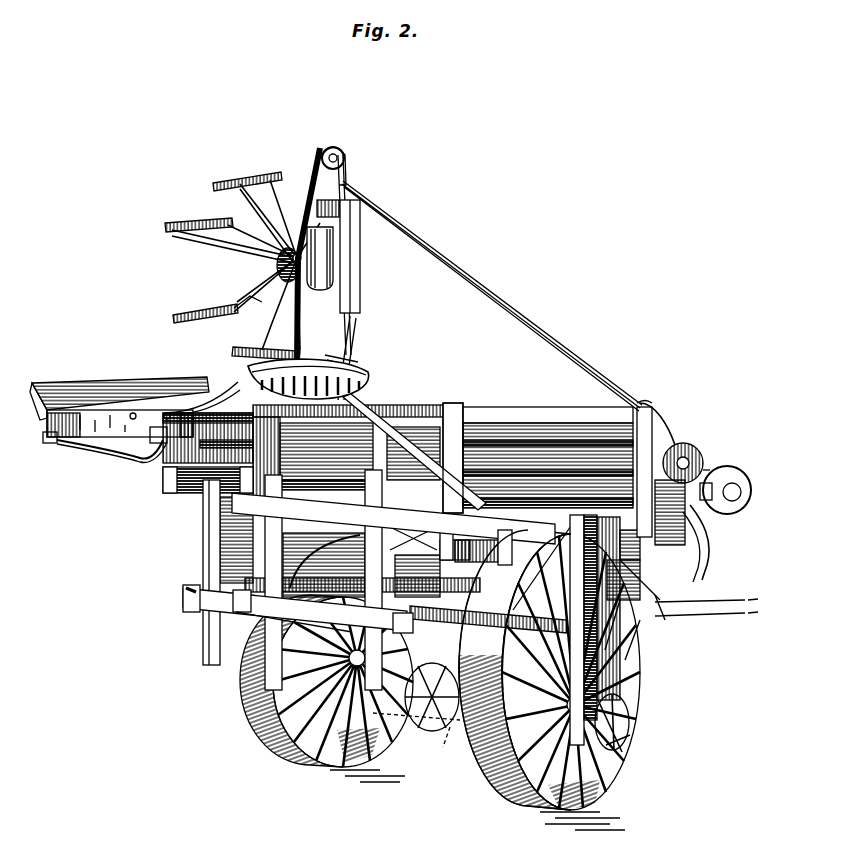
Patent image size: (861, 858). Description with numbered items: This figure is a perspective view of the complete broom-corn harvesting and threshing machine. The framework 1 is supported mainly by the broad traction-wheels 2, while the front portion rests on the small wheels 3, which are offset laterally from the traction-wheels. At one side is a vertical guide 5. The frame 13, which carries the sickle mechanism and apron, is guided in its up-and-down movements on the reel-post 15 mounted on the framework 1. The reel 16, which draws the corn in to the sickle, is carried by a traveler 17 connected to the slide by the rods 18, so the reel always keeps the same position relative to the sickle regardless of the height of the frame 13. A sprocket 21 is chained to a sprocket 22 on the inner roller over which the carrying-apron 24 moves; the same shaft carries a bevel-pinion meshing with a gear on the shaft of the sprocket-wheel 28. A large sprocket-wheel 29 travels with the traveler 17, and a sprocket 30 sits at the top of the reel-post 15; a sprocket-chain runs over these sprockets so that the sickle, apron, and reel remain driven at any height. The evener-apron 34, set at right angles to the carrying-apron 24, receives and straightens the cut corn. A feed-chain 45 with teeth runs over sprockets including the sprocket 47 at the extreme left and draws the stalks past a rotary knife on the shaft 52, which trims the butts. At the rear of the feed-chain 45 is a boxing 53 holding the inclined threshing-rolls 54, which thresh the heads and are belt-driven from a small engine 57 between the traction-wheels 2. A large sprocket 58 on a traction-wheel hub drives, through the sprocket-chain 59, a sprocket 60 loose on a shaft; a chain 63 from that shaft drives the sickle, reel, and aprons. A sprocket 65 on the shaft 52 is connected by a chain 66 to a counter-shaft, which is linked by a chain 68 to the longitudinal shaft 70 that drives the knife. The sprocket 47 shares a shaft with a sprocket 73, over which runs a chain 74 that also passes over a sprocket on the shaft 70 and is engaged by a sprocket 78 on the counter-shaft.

The framework 1 is at (183, 593).
The traction-wheels 2 is at (263, 743).
The small wheels 3 is at (427, 721).
The guide 5 is at (203, 543).
The frame 13 is at (119, 407).
The reel-post 15 is at (353, 321).
The reel 16 is at (247, 292).
The traveler 17 is at (362, 268).
The rods 18 is at (355, 358).
The sprocket 21 is at (298, 410).
The sprocket 22 is at (364, 388).
The carrying-apron 24 is at (202, 410).
The sprocket-wheel 28 is at (238, 416).
The large sprocket-wheel 29 is at (333, 250).
The sprocket 30 is at (338, 150).
The evener-apron 34 is at (188, 494).
The feed-chain 45 is at (737, 470).
The sprocket 47 is at (712, 501).
The shaft 52 is at (690, 452).
The boxing 53 is at (652, 433).
The threshing-rolls 54 is at (545, 470).
The small engine 57 is at (466, 752).
The large sprocket 58 is at (298, 610).
The sprocket-chain 59 is at (488, 634).
The sprocket 60 is at (515, 610).
The chain 63 is at (393, 518).
The sprocket 65 is at (710, 459).
The chain 66 is at (680, 445).
The chain 68 is at (477, 537).
The shaft 70 is at (289, 611).
The sprocket 73 is at (742, 492).
The chain 74 is at (705, 522).
The sprocket 78 is at (513, 523).